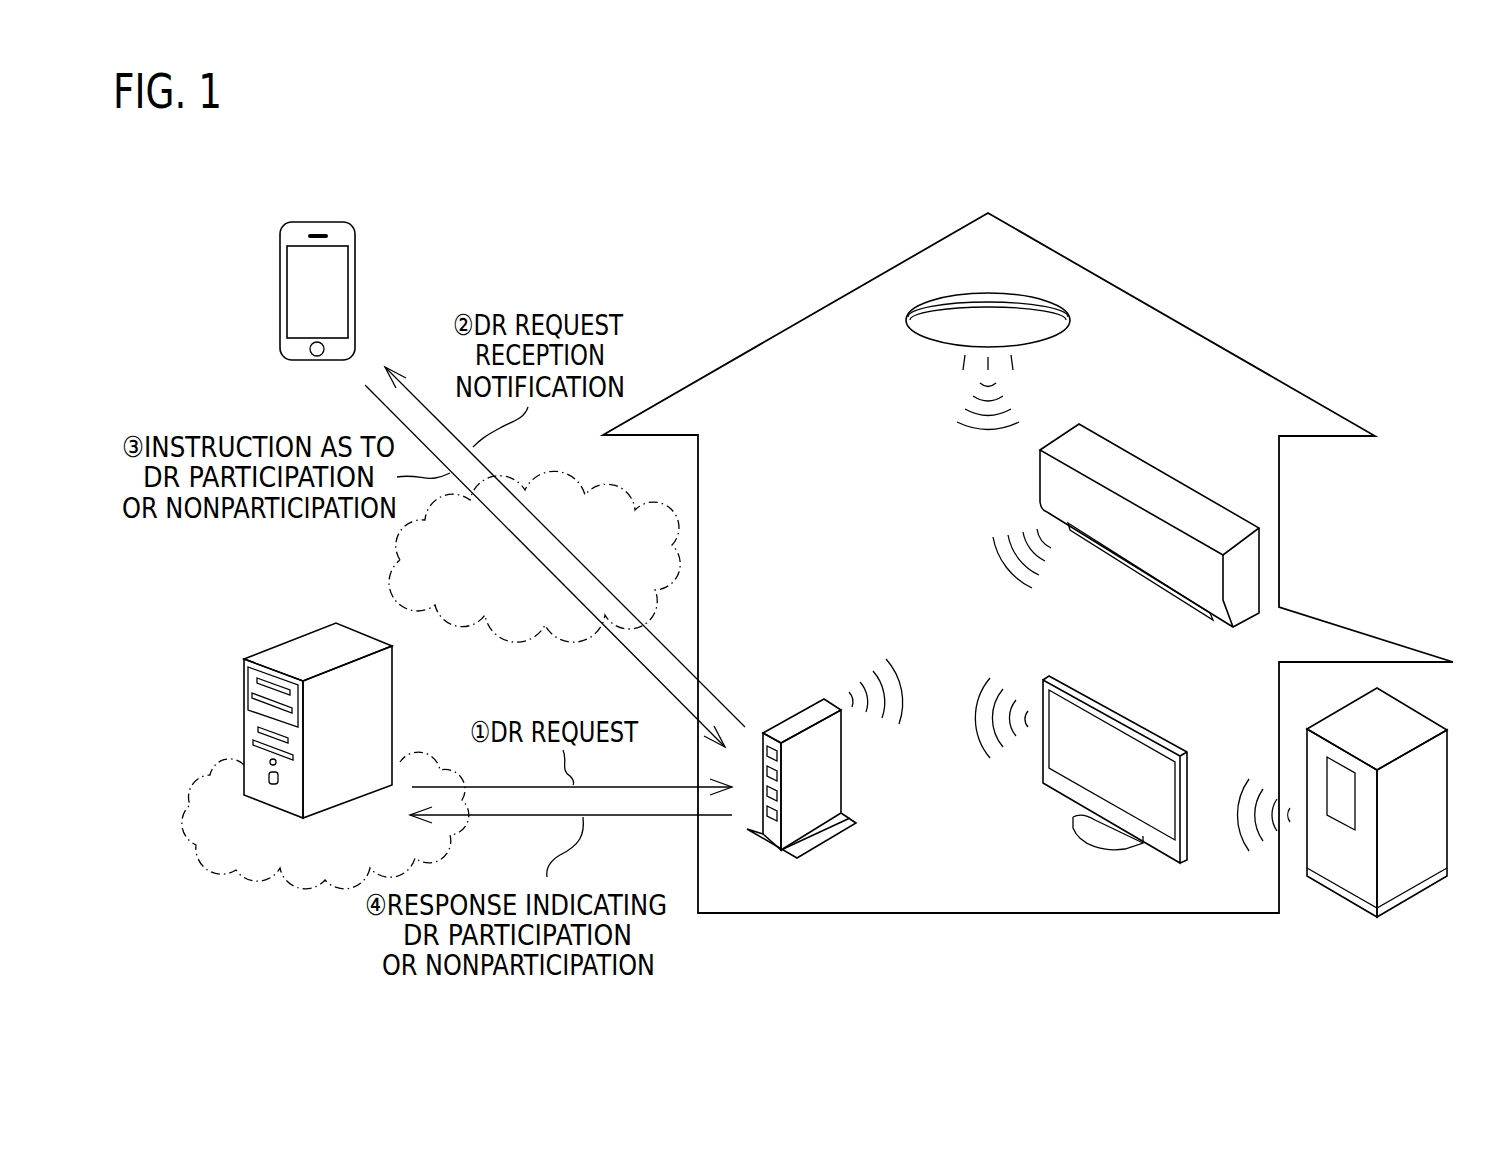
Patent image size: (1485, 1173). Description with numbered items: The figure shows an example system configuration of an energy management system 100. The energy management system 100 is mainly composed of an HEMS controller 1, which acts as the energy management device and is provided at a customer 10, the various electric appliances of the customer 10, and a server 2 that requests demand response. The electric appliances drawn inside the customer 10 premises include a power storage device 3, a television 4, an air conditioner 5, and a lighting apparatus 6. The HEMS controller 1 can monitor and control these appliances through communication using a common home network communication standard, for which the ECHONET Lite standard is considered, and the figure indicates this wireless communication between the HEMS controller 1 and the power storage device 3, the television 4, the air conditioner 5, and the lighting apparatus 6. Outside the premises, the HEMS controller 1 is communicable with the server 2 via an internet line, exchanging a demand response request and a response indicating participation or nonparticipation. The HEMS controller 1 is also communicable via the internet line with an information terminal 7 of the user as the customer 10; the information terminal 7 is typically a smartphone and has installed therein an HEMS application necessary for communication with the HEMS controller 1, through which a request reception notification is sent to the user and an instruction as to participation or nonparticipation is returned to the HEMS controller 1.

The HEMS controller 1 is at (800, 722).
The server 2 is at (312, 652).
The power storage device 3 is at (1413, 900).
The television 4 is at (1110, 716).
The air conditioner 5 is at (1158, 478).
The lighting apparatus 6 is at (906, 315).
The information terminal 7 is at (318, 222).
The customer 10 is at (988, 914).
The energy management system 100 is at (760, 267).